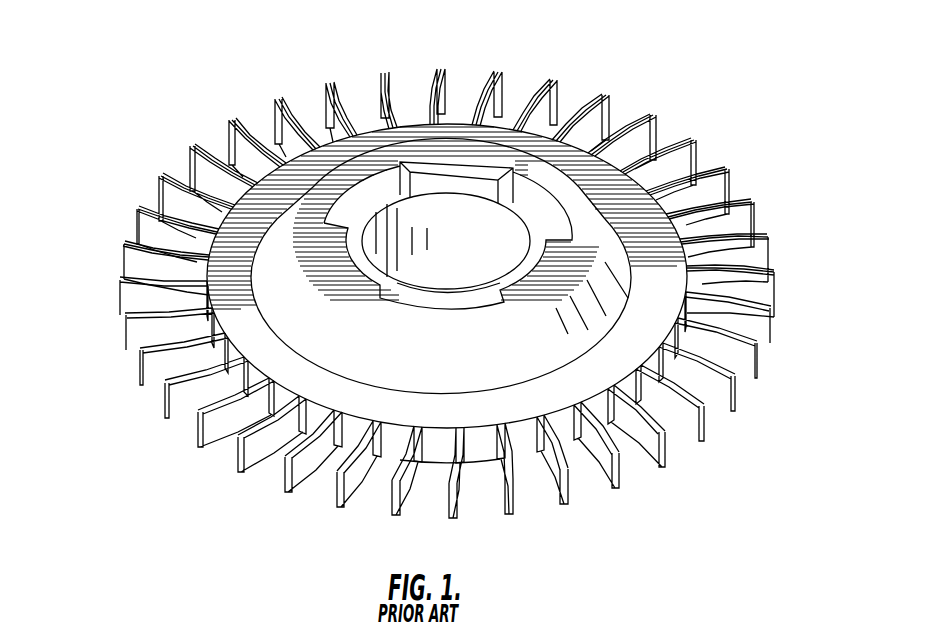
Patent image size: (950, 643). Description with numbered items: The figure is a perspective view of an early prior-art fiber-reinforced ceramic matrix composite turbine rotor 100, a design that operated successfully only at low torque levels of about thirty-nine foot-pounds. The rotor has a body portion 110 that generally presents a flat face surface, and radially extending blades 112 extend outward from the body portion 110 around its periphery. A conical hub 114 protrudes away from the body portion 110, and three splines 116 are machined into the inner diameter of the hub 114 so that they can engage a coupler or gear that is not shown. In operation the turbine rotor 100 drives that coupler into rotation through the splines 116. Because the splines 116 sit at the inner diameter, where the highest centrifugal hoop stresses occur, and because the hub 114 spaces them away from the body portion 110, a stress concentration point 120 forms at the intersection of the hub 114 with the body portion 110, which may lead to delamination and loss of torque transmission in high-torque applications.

The turbine rotor 100 is at (779, 120).
The body portion 110 is at (122, 246).
The blades 112 is at (602, 92).
The conical hub 114 is at (273, 278).
The splines 116 is at (372, 207).
The stress concentration point 120 is at (295, 358).